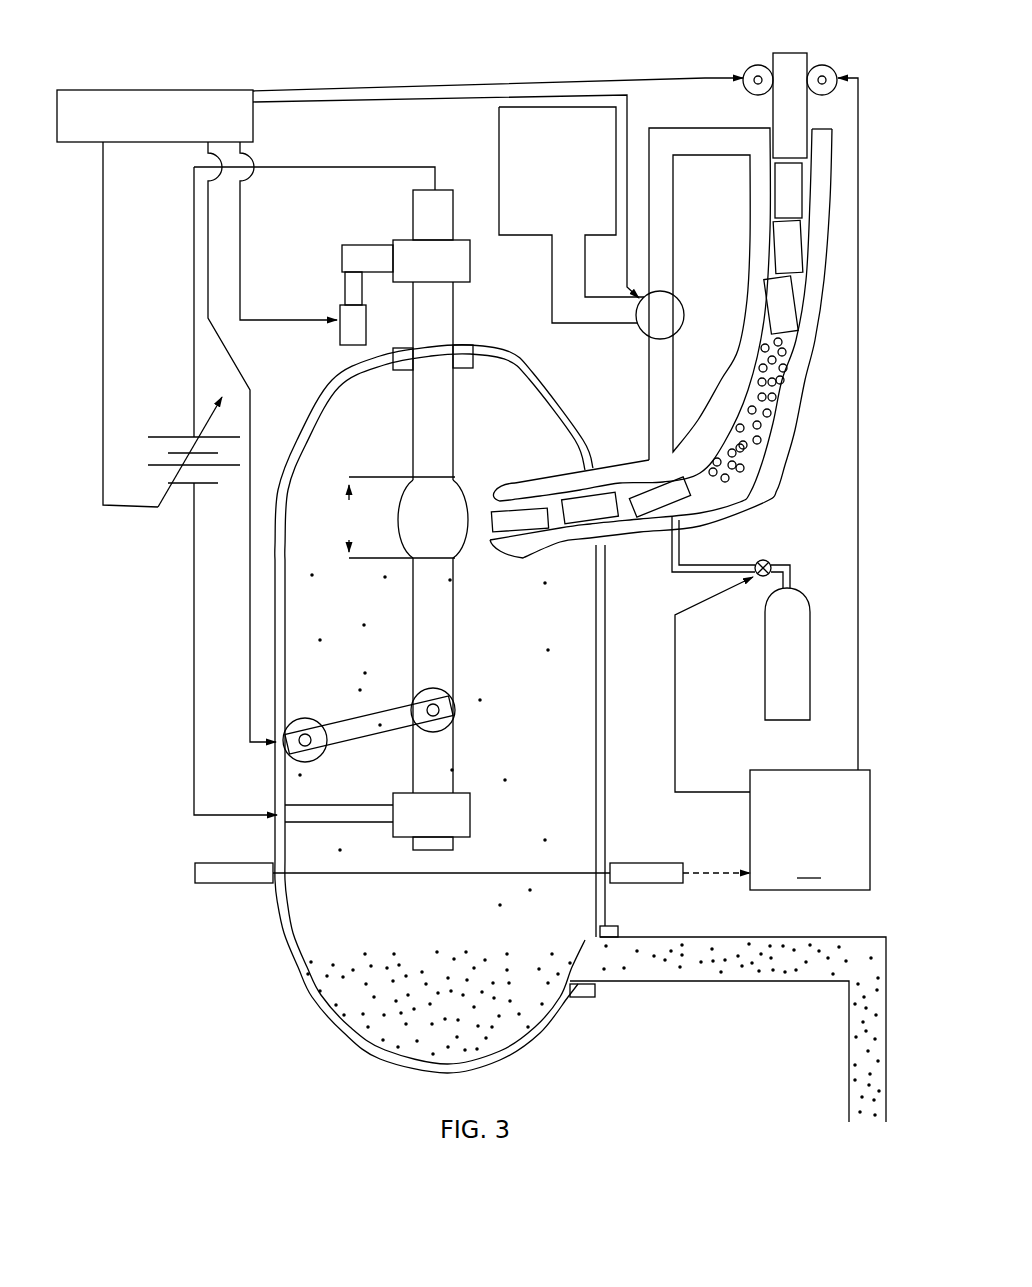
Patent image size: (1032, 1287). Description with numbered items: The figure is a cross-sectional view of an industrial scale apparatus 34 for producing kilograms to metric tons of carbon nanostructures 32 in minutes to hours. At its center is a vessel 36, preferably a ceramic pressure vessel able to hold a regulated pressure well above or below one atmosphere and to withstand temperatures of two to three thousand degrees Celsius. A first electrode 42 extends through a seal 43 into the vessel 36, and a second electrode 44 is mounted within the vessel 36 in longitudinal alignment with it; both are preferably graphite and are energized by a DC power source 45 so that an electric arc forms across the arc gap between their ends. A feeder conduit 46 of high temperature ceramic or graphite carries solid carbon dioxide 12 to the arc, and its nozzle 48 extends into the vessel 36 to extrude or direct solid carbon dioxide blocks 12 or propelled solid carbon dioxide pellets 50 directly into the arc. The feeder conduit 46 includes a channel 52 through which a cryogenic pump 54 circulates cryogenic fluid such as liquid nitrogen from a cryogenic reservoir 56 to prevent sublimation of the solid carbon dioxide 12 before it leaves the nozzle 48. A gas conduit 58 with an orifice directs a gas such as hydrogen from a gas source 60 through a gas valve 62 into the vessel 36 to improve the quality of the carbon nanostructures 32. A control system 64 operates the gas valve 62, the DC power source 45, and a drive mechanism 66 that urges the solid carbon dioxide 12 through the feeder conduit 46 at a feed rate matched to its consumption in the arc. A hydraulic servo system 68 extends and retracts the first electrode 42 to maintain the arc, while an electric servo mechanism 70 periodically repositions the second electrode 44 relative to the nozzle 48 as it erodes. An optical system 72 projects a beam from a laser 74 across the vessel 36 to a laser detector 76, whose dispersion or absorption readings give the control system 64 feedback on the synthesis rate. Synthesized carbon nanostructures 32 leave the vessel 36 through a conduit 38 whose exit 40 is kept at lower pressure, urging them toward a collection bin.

The solid carbon dioxide 12 is at (789, 53).
The carbon nanostructures 32 is at (312, 974).
The industrial scale apparatus 34 is at (408, 53).
The vessel 36 is at (534, 376).
The conduit 38 is at (689, 984).
The exit 40 is at (862, 1130).
The first electrode 42 is at (445, 386).
The seal 43 is at (465, 347).
The second electrode 44 is at (445, 633).
The DC power source 45 is at (183, 433).
The feeder conduit 46 is at (740, 492).
The nozzle 48 is at (488, 538).
The solid carbon dioxide pellets 50 is at (764, 442).
The channel 52 is at (660, 403).
The cryogenic pump 54 is at (665, 317).
The cryogenic reservoir 56 is at (545, 178).
The gas conduit 58 is at (670, 557).
The gas source 60 is at (775, 669).
The gas valve 62 is at (770, 562).
The control system 64 is at (158, 104).
The drive mechanism 66 is at (753, 67).
The hydraulic servo system 68 is at (340, 301).
The electric servo mechanism 70 is at (368, 716).
The optical system 72 is at (163, 879).
The laser 74 is at (235, 863).
The laser detector 76 is at (626, 863).